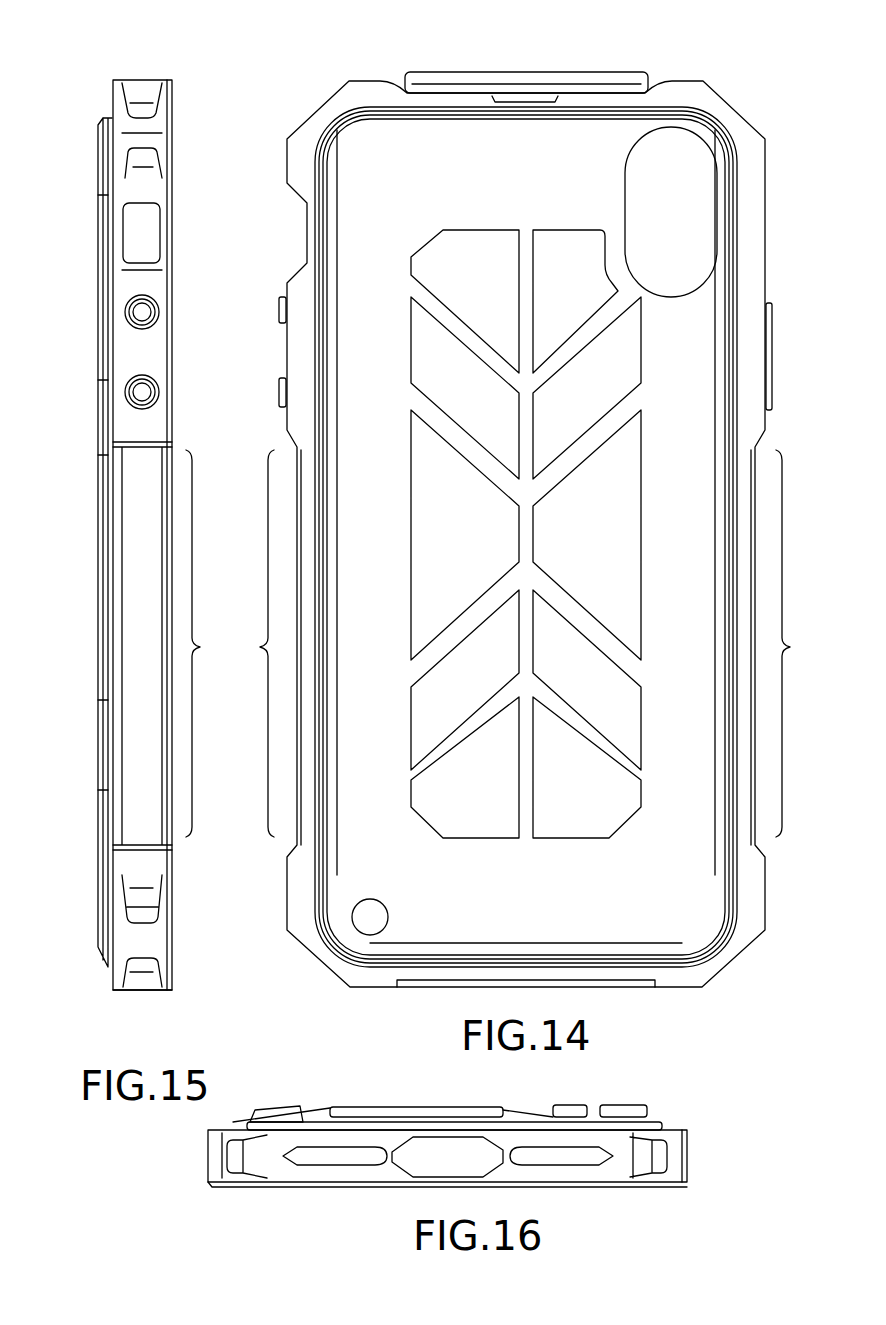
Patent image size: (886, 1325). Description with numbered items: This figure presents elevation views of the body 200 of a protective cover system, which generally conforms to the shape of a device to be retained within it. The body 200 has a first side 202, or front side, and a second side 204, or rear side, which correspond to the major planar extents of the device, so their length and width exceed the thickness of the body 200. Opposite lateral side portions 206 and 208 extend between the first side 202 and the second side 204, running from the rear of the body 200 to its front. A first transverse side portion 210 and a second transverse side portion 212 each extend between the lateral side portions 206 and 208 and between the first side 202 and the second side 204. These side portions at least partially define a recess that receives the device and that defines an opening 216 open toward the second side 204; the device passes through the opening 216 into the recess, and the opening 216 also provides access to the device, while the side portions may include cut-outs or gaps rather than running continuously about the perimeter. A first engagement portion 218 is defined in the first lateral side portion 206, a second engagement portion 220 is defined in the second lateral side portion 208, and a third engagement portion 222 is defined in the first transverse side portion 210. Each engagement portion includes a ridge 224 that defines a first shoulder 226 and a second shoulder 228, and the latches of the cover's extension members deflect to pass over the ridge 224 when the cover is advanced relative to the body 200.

In FIG. 15, the body 200 is at (200, 62).
In FIG. 15, the first side 202 is at (103, 225).
In FIG. 16, the first side 202 is at (410, 1106).
In FIG. 14, the second side 204 is at (636, 196).
In FIG. 15, the second side 204 is at (173, 266).
In FIG. 16, the second side 204 is at (590, 1181).
In FIG. 14, the first lateral side portion 206 is at (770, 233).
In FIG. 16, the first lateral side portion 206 is at (207, 1158).
In FIG. 14, the second lateral side portion 208 is at (285, 352).
In FIG. 15, the second lateral side portion 208 is at (128, 353).
In FIG. 16, the second lateral side portion 208 is at (690, 1155).
In FIG. 14, the first transverse side portion 210 is at (358, 102).
In FIG. 15, the first transverse side portion 210 is at (143, 77).
In FIG. 14, the second transverse side portion 212 is at (618, 990).
In FIG. 15, the second transverse side portion 212 is at (148, 993).
In FIG. 16, the second transverse side portion 212 is at (332, 1158).
In FIG. 14, the opening 216 is at (338, 703).
In FIG. 14, the first engagement portion 218 is at (792, 653).
In FIG. 14, the second engagement portion 220 is at (245, 643).
In FIG. 15, the second engagement portion 220 is at (193, 643).
In FIG. 14, the third engagement portion 222 is at (525, 70).
In FIG. 15, the ridge 224 is at (134, 787).
In FIG. 15, the first shoulder 226 is at (122, 617).
In FIG. 15, the second shoulder 228 is at (162, 708).